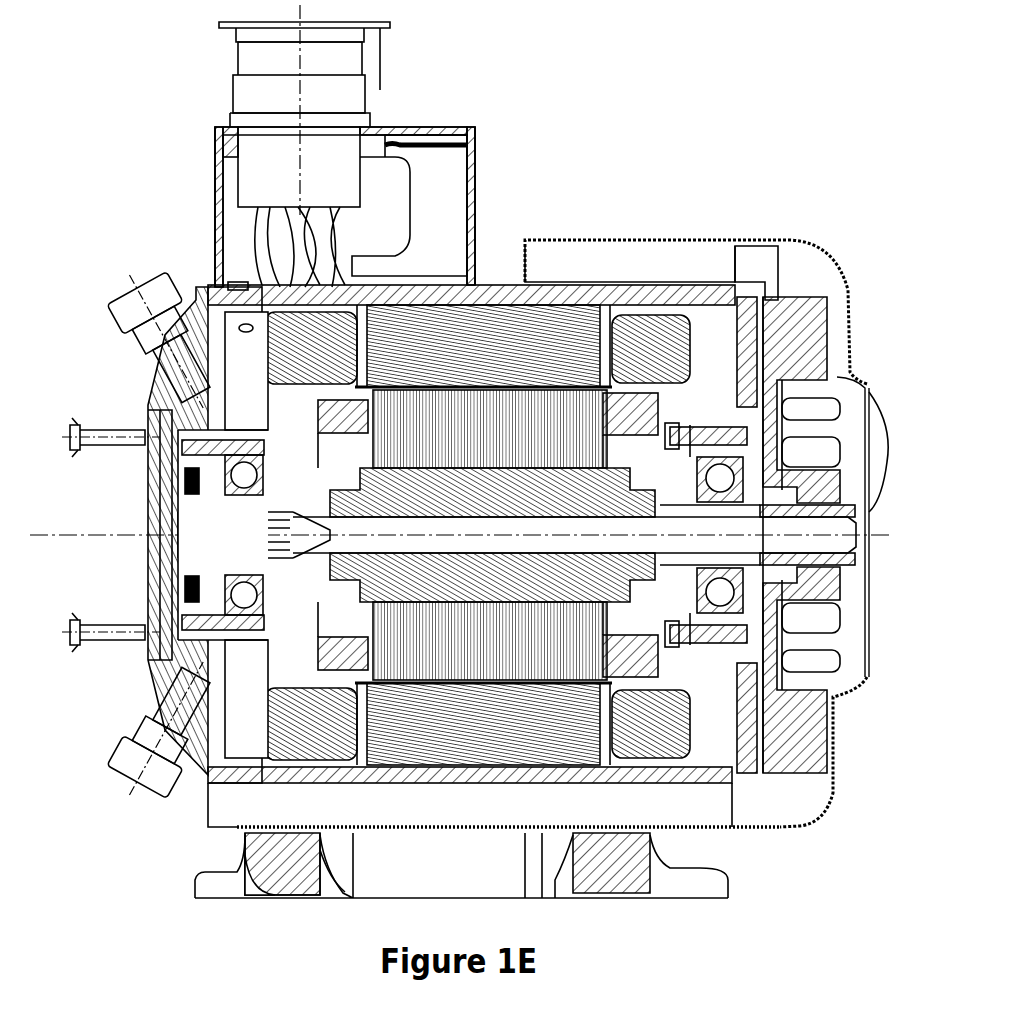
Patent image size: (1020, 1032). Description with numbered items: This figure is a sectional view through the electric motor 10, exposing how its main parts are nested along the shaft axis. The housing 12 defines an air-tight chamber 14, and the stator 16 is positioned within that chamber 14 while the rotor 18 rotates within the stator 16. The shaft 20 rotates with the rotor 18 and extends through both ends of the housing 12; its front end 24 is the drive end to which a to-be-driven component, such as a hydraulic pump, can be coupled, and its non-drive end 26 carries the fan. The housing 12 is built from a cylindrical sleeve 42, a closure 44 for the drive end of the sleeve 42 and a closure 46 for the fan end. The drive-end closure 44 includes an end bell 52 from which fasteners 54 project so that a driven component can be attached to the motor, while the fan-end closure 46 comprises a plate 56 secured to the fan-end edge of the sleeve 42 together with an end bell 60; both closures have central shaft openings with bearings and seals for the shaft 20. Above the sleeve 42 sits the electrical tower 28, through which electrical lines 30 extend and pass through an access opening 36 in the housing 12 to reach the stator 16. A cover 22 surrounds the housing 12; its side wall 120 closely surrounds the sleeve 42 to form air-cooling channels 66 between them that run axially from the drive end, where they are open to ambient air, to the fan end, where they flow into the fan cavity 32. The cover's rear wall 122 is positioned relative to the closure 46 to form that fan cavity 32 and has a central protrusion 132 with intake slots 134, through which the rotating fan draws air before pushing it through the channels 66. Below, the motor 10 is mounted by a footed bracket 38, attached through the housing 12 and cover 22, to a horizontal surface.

The electric motor 10 is at (548, 160).
The housing 12 is at (487, 282).
The air-tight chamber 14 is at (300, 466).
The stator 16 is at (285, 735).
The rotor 18 is at (578, 650).
The shaft 20 is at (870, 680).
The cover 22 is at (650, 238).
The front end of the shaft 24 is at (178, 530).
The non-drive end of the shaft 26 is at (886, 440).
The electrical tower 28 is at (402, 127).
The electrical lines 30 is at (320, 235).
The fan cavity 32 is at (848, 380).
The access opening 36 is at (228, 285).
The footed bracket 38 is at (660, 845).
The cylindrical sleeve 42 is at (575, 300).
The drive-end closure 44 is at (115, 715).
The fan-end closure 46 is at (752, 295).
The end bell 52 is at (142, 675).
The fasteners 54 is at (72, 452).
The plate 56 is at (720, 755).
The end bell 60 is at (760, 755).
The air-cooling channels 66 is at (525, 262).
The side wall 120 is at (772, 244).
The rear wall 122 is at (823, 750).
The central protrusion 132 is at (855, 690).
The intake slots 134 is at (868, 600).